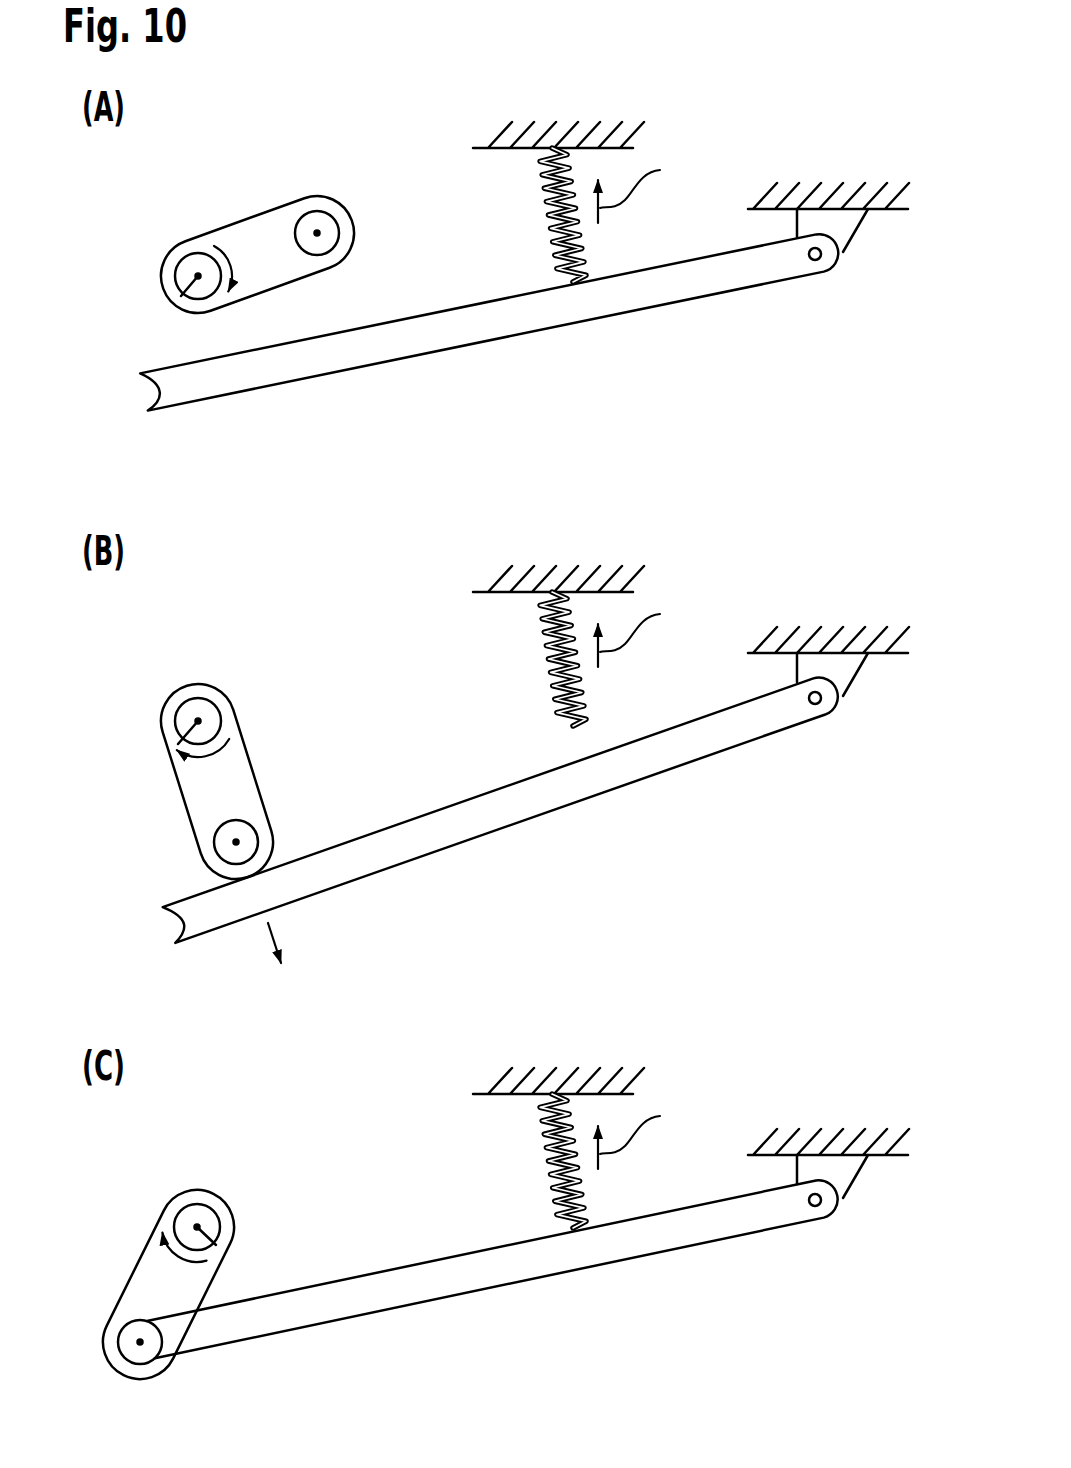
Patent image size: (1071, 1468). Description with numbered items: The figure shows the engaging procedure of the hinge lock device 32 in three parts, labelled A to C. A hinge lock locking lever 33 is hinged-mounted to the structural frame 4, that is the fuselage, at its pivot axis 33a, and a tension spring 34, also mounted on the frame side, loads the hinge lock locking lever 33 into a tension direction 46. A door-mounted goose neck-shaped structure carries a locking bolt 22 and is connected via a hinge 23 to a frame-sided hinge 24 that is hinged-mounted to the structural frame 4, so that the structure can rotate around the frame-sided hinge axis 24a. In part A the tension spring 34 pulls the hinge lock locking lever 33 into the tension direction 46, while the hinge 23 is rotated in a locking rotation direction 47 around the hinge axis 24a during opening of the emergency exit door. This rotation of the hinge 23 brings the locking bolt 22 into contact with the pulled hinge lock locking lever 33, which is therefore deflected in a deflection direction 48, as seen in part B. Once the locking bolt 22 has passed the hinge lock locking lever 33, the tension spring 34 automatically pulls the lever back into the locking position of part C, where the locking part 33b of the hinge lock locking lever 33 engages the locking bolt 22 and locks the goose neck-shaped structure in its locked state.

The structural frame 4 is at (691, 605).
The locking bolt 22 is at (317, 211).
The hinge 23 is at (275, 238).
The frame-sided hinge 24 is at (180, 258).
The frame-sided hinge axis 24a is at (181, 296).
The hinge lock device 32 is at (771, 655).
The hinge lock locking lever 33 is at (489, 796).
The pivot axis 33a is at (879, 753).
The locking part 33b is at (150, 400).
The tension spring 34 is at (529, 688).
The tension direction 46 is at (649, 655).
The locking rotation direction 47 is at (232, 260).
The deflection direction 48 is at (273, 934).